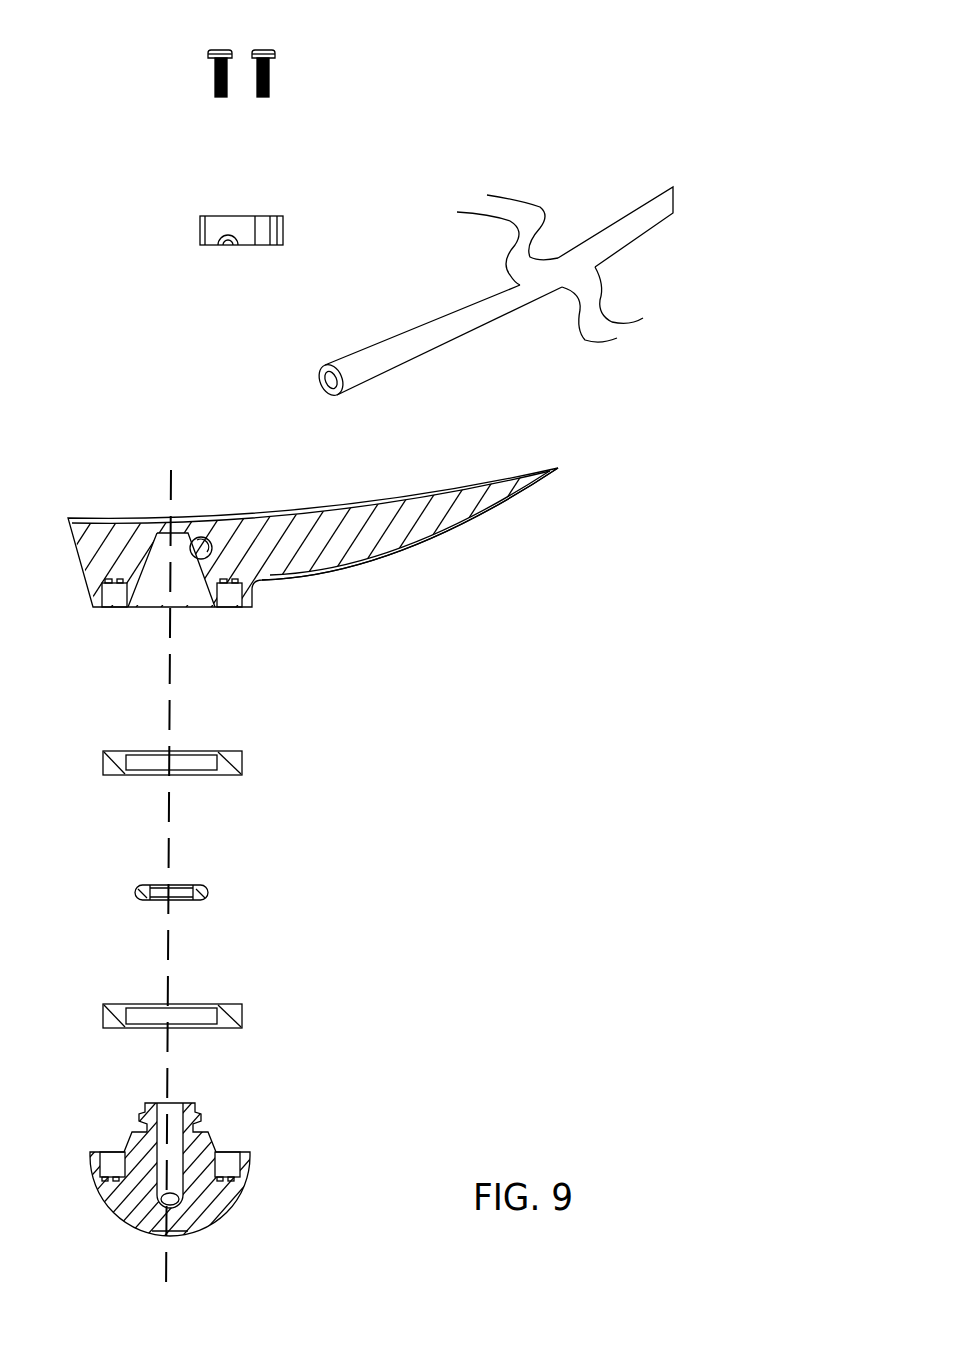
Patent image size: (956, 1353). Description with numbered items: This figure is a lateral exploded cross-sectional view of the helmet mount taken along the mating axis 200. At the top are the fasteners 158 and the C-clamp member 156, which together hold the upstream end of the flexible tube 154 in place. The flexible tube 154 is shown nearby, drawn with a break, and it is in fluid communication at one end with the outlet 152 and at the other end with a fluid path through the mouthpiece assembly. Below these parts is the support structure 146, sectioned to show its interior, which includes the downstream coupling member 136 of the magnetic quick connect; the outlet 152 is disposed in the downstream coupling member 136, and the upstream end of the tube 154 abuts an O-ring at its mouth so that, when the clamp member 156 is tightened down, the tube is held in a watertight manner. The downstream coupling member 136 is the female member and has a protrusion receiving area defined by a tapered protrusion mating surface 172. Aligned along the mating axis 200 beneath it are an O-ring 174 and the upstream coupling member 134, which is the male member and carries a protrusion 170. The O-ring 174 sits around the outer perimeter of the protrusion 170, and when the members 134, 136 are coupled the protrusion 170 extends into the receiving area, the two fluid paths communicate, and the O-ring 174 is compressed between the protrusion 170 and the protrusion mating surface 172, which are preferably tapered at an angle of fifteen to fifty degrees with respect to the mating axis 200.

The fasteners 158 is at (208, 53).
The C-clamp member 156 is at (268, 216).
The flexible tube 154 is at (482, 340).
The downstream coupling member 136 is at (300, 564).
The outlet 152 is at (197, 545).
The support structure 146 is at (353, 520).
The protrusion mating surface 172 is at (202, 608).
The O-ring 174 is at (205, 887).
The protrusion 170 is at (205, 1133).
The upstream coupling member 134 is at (196, 1165).
The mating axis 200 is at (178, 1265).